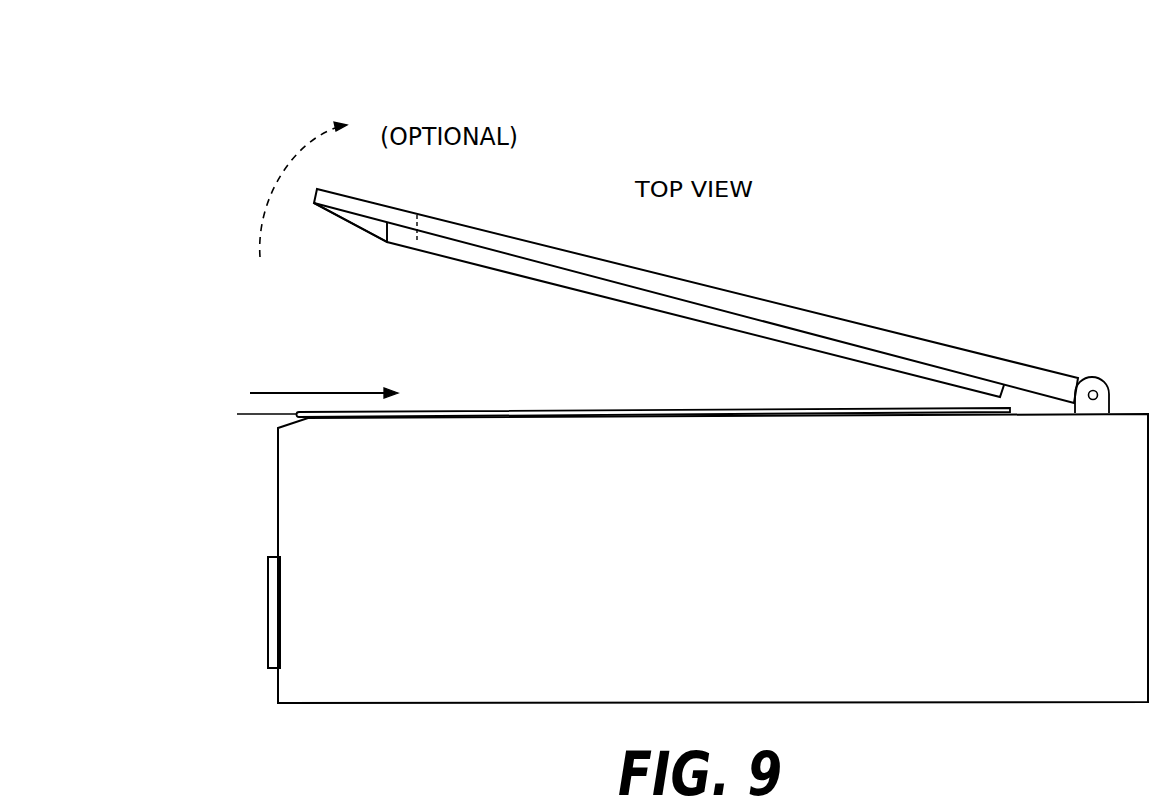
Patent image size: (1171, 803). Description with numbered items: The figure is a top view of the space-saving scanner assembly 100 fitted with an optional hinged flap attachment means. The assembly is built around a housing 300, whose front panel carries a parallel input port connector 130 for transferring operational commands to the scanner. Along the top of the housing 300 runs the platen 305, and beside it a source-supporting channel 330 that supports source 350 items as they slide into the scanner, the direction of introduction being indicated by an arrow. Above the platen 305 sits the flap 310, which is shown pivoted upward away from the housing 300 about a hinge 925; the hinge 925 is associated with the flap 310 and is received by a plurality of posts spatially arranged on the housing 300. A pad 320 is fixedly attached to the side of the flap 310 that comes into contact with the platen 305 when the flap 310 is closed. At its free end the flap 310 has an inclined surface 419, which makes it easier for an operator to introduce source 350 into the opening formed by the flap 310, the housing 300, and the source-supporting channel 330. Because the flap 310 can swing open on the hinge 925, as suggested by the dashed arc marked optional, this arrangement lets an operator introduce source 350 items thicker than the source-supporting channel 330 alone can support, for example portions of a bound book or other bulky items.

The space-saving scanner assembly 100 is at (605, 116).
The parallel input port connector 130 is at (277, 622).
The housing 300 is at (1010, 703).
The platen 305 is at (685, 409).
The flap 310 is at (748, 308).
The pad 320 is at (667, 305).
The source-supporting channel 330 is at (517, 406).
The source 350 is at (274, 422).
The inclined surface 419 is at (358, 229).
The hinge 925 is at (1092, 380).